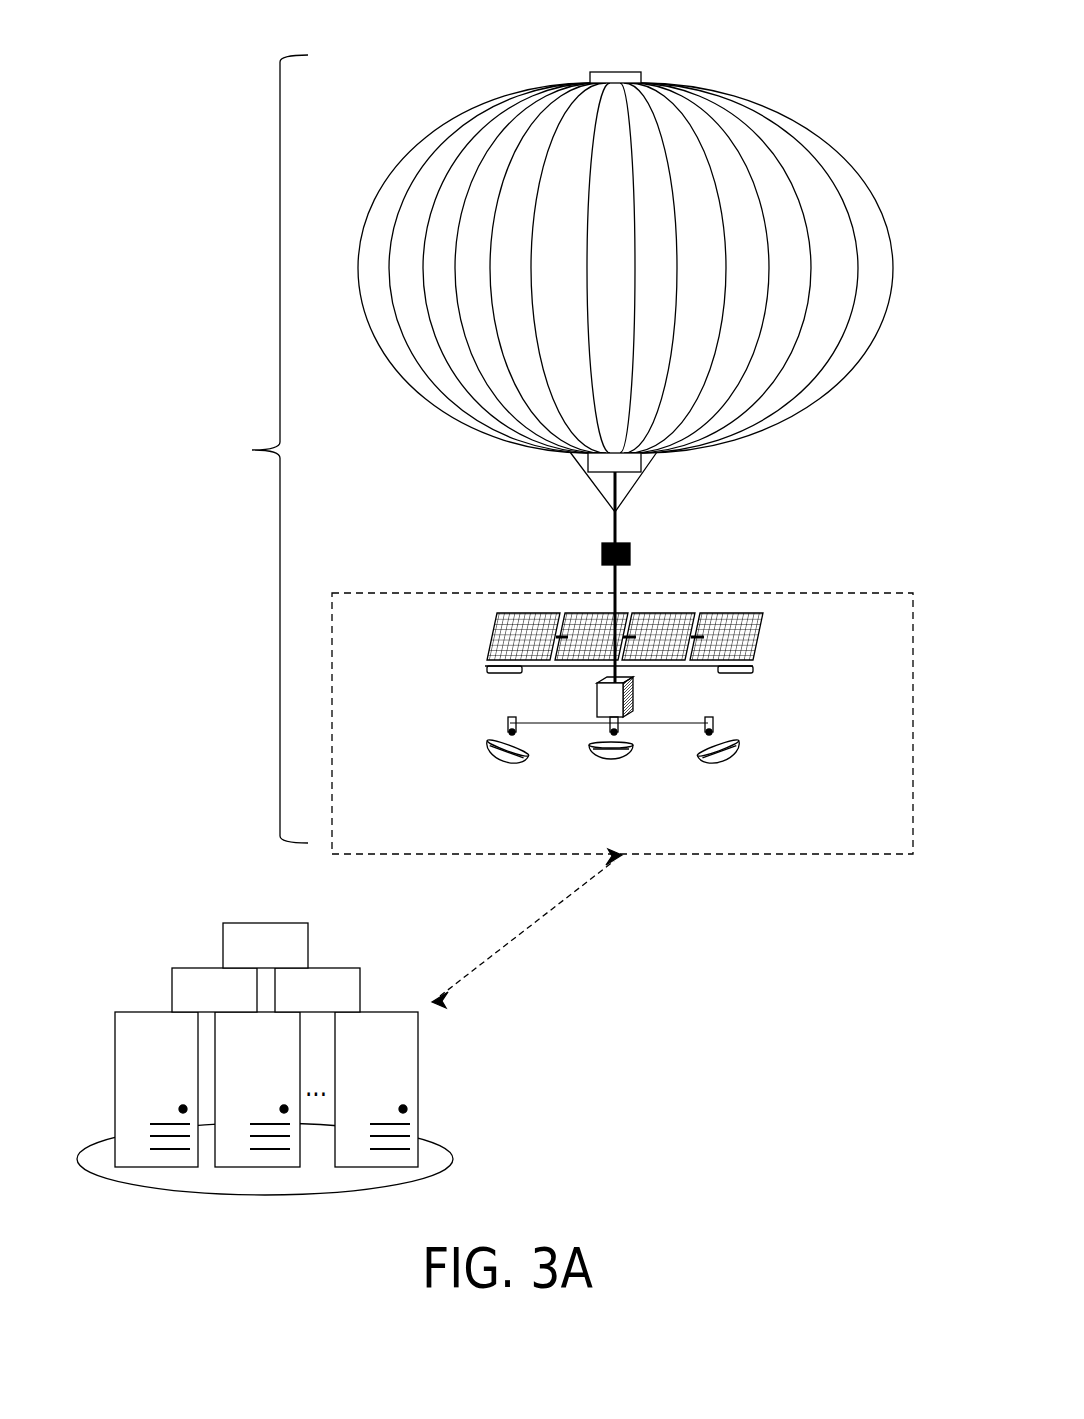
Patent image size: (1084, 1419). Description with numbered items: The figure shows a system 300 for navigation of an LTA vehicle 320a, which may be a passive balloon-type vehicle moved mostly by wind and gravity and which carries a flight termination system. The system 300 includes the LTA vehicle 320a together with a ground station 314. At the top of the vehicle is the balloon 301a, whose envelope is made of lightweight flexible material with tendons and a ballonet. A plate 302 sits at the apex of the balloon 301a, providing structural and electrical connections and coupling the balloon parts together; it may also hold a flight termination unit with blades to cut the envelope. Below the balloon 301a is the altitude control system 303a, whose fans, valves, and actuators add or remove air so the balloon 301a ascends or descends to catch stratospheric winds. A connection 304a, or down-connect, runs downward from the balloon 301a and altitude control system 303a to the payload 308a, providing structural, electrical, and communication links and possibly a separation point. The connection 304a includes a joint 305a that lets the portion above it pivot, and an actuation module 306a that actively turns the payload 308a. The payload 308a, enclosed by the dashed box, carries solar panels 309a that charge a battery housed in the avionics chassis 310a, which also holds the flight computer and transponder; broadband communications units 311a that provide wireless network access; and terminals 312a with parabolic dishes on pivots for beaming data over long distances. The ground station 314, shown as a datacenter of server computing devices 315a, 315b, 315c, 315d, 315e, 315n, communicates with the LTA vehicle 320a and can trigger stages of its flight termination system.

The system 300 is at (138, 118).
The balloon 301a is at (847, 163).
The plate 302 is at (645, 75).
The altitude control system 303a is at (637, 465).
The connection 304a is at (613, 528).
The joint 305a is at (620, 512).
The actuation module 306a is at (600, 555).
The payload 308a is at (410, 638).
The solar panel 309a is at (760, 627).
The avionics chassis 310a is at (597, 700).
The broadband communications unit 311a is at (733, 673).
The terminal 312a is at (520, 760).
The ground station 314 is at (432, 1031).
The server computing device 315a is at (297, 957).
The server computing device 315b is at (248, 1003).
The server computing device 315c is at (351, 1003).
The server computing device 315d is at (188, 1047).
The server computing device 315e is at (288, 1047).
The server computing device 315n is at (408, 1047).
The LTA vehicle 320a is at (241, 449).